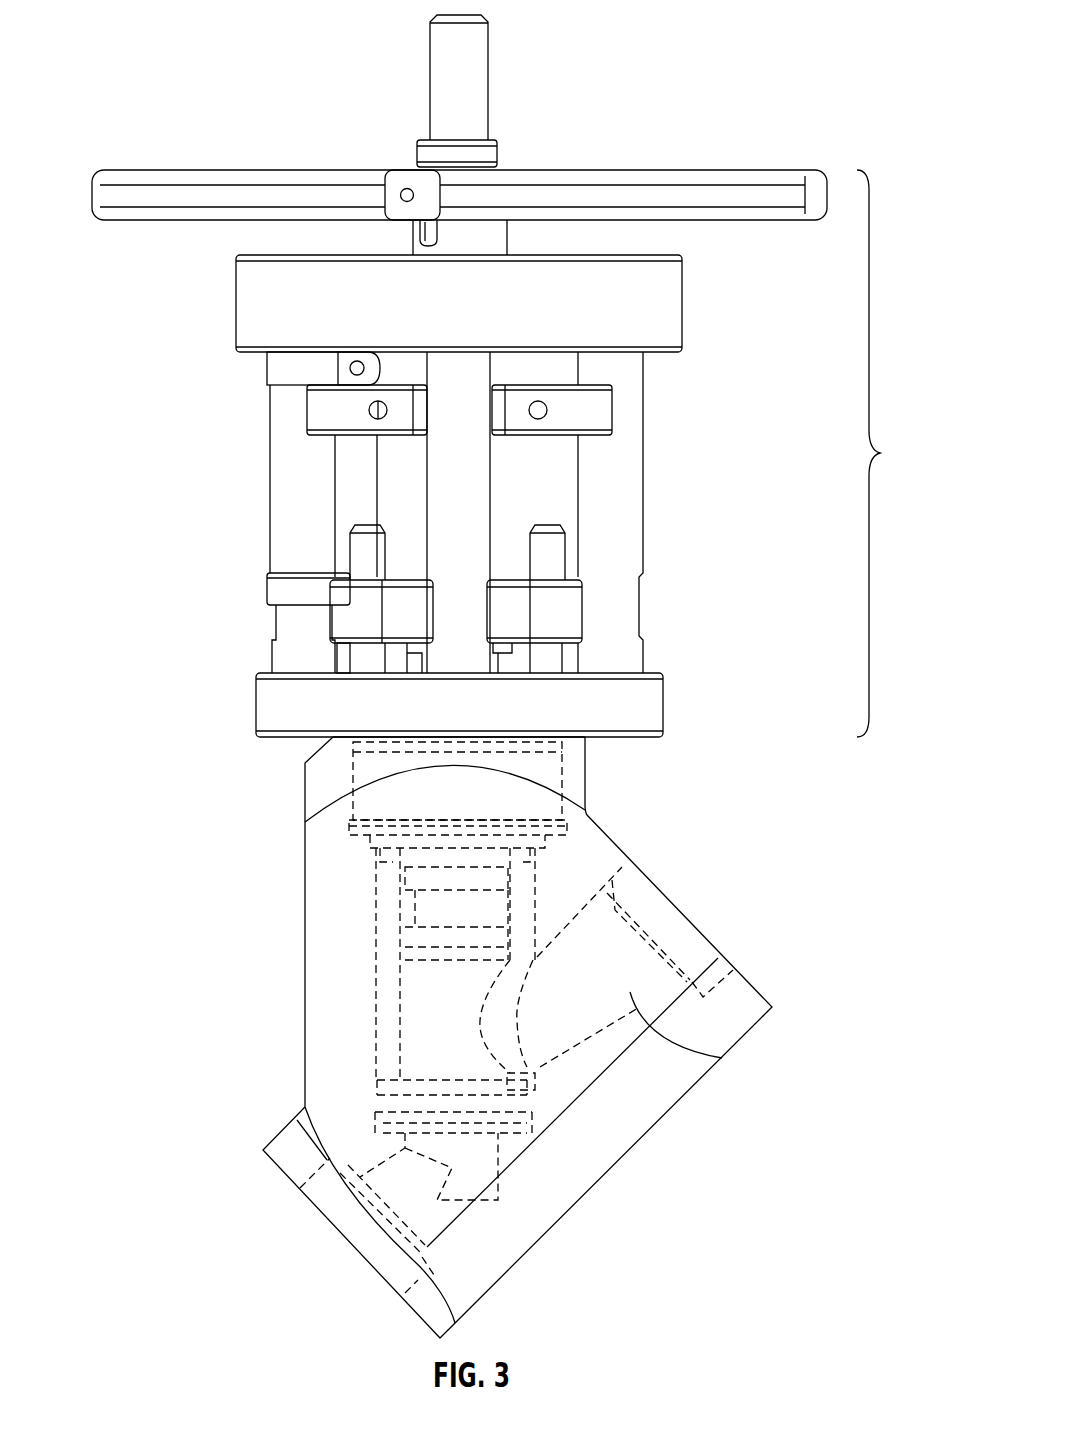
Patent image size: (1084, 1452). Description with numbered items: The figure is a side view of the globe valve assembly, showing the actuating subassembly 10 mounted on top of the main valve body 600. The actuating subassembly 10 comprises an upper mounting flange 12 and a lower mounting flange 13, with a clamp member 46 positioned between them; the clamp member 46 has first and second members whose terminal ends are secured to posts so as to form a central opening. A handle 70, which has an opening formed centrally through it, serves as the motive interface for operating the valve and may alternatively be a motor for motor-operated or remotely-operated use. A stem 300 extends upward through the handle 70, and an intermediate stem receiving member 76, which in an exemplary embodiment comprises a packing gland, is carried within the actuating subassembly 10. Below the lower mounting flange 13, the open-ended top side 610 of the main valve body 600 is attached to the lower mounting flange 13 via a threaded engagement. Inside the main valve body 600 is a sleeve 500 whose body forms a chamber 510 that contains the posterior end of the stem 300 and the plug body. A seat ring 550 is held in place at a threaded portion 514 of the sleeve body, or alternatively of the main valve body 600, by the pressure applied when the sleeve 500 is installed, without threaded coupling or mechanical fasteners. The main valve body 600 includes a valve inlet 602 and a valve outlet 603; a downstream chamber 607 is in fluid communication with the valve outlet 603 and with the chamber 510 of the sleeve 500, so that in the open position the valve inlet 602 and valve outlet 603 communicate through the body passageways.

The actuating subassembly 10 is at (591, 453).
The upper mounting flange 12 is at (236, 300).
The lower mounting flange 13 is at (256, 700).
The clamp member 46 is at (590, 410).
The handle 70 is at (630, 170).
The intermediate stem receiving member 76 is at (558, 615).
The stem 300 is at (490, 85).
The sleeve 500 is at (375, 978).
The chamber 510 is at (493, 1007).
The threaded portion 514 is at (537, 1112).
The seat ring 550 is at (493, 1088).
The main valve body 600 is at (535, 1243).
The valve inlet 602 is at (405, 1270).
The valve outlet 603 is at (680, 943).
The downstream chamber 607 is at (723, 1058).
The open-ended top side 610 is at (598, 740).